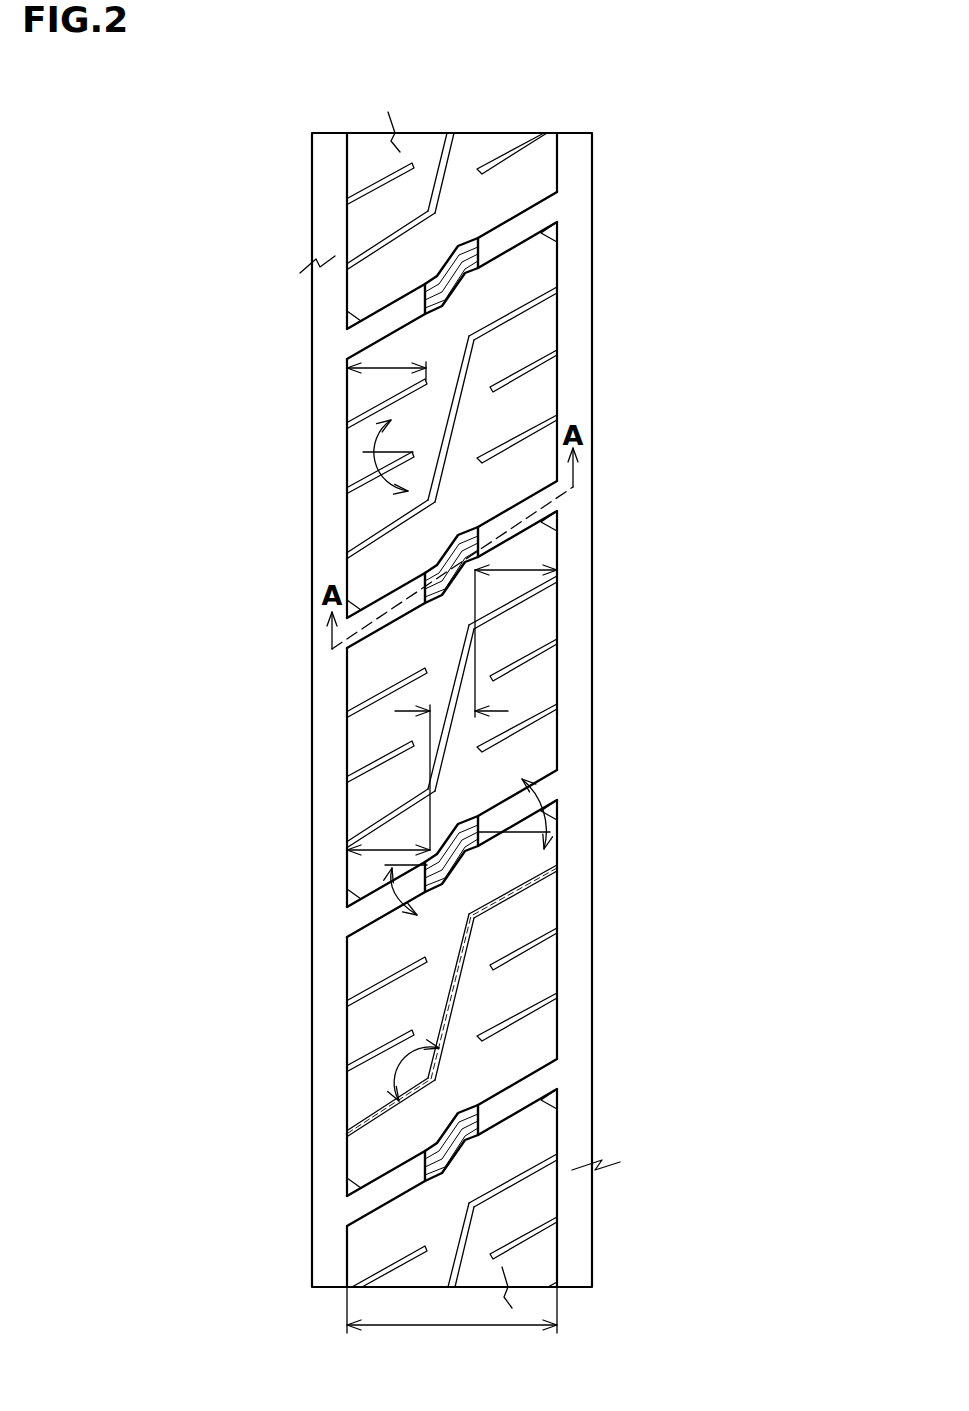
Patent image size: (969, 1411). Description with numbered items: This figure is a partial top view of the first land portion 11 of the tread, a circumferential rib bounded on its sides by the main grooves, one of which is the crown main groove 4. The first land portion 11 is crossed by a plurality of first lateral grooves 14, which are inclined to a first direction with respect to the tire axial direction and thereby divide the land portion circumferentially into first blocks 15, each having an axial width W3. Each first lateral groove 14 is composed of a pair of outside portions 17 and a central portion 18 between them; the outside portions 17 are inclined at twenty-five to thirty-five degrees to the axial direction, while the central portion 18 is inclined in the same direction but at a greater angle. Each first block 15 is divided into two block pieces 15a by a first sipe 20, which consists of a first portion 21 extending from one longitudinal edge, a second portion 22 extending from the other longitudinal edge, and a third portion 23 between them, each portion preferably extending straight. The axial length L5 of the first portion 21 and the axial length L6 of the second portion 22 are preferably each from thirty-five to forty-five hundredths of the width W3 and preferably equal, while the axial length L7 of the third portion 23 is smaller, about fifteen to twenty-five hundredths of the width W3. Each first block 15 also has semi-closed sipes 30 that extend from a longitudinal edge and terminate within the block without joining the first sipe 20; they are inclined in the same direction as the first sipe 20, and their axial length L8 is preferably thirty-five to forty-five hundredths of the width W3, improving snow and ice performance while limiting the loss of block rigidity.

The crown main groove 4 is at (328, 172).
The first land portion 11 is at (480, 672).
The first lateral groove 14 is at (480, 694).
The first block 15 is at (473, 432).
The block piece 15a is at (398, 1008).
The outside portion 17 is at (532, 223).
The central portion 18 is at (457, 283).
The first sipe 20 is at (480, 710).
The first portion 21 is at (392, 812).
The second portion 22 is at (505, 603).
The third portion 23 is at (445, 668).
The semi-closed sipe 30 is at (380, 405).
The axial length of the first portion L5 is at (380, 850).
The axial length of the second portion L6 is at (520, 567).
The axial length of the third portion L7 is at (395, 711).
The axial length of the semi-closed sipe L8 is at (383, 366).
The axial width of the first block W3 is at (452, 1332).